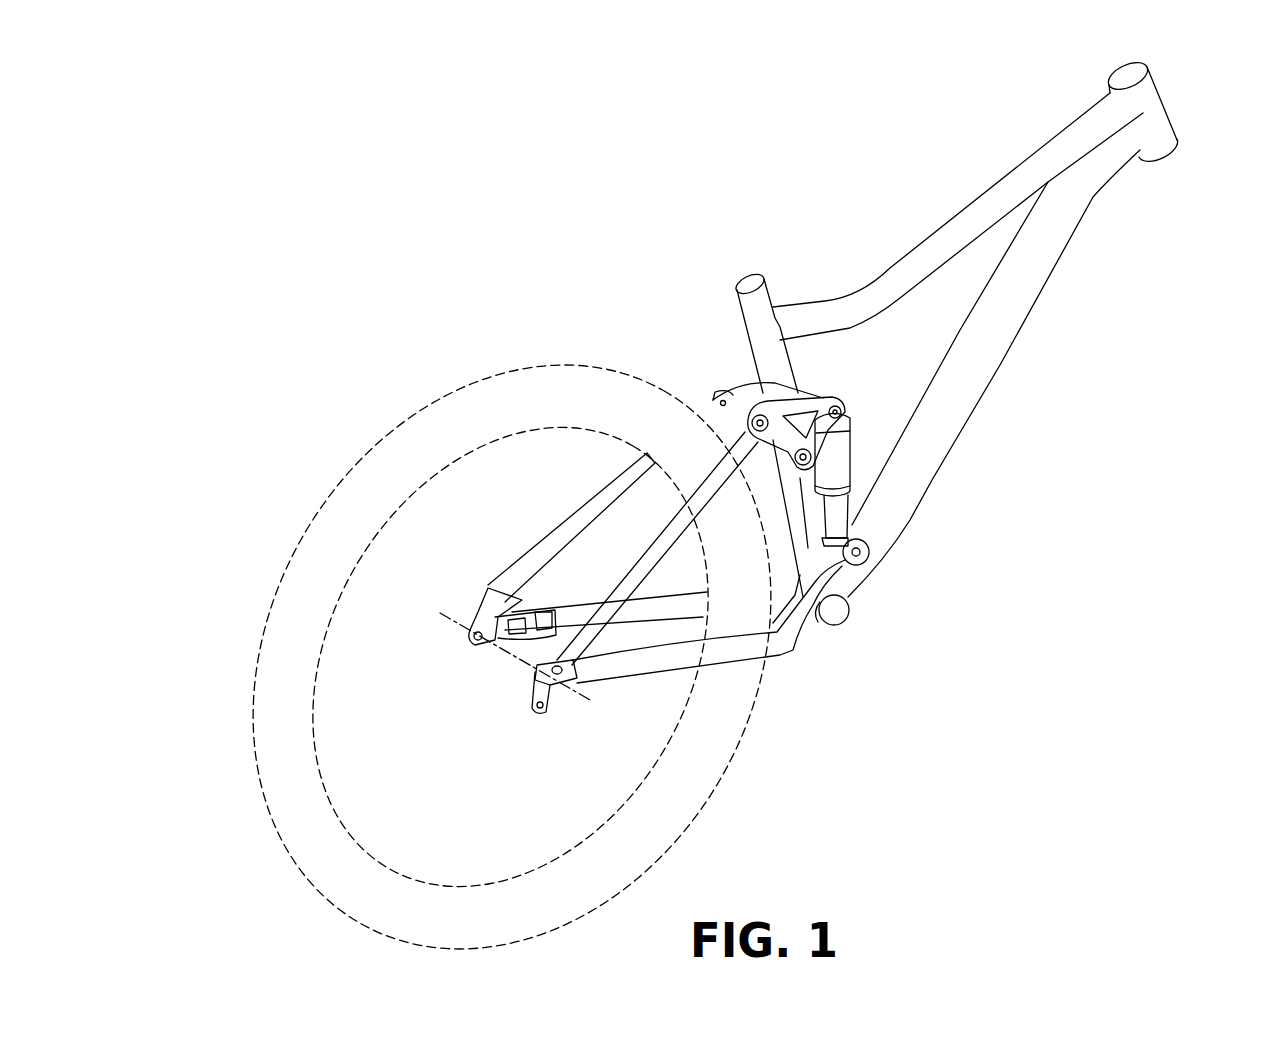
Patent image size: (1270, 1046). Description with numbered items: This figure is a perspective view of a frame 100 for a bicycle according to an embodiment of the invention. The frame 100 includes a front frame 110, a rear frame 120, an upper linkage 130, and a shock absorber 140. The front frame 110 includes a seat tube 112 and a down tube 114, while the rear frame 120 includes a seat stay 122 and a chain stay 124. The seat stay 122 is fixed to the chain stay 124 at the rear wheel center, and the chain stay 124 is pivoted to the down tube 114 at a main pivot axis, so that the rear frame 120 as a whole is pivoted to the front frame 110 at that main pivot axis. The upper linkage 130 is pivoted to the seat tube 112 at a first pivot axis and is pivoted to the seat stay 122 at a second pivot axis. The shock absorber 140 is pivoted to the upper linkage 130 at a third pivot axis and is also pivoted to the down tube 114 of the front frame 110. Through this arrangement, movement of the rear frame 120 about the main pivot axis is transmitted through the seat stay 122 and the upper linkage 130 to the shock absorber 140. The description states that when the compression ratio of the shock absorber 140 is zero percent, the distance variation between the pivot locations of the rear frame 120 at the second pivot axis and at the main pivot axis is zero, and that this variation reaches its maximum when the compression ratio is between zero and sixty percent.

The frame 100 is at (684, 539).
The front frame 110 is at (921, 330).
The seat tube 112 is at (752, 307).
The down tube 114 is at (968, 378).
The rear frame 120 is at (586, 548).
The seat stay 122 is at (563, 535).
The chain stay 124 is at (681, 653).
The upper linkage 130 is at (813, 383).
The shock absorber 140 is at (843, 468).